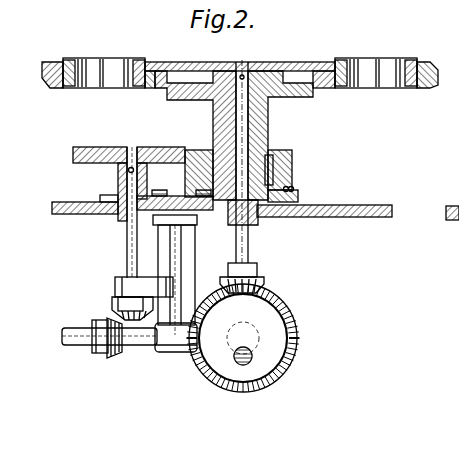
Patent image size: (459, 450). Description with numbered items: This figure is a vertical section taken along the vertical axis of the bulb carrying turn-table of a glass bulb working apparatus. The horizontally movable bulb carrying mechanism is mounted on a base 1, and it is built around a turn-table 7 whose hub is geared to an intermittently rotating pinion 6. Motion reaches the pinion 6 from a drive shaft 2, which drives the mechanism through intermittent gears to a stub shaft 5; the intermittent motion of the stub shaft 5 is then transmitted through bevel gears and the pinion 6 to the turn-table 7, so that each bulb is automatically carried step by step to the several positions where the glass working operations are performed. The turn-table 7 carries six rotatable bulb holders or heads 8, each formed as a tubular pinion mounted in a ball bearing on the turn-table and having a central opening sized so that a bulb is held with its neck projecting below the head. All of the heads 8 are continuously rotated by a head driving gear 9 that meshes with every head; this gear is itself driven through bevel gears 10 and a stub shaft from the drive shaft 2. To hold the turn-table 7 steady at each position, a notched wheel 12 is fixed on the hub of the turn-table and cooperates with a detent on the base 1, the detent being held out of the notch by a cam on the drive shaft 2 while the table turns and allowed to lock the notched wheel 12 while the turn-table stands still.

The base 1 is at (365, 205).
The drive shaft 2 is at (250, 344).
The stub shaft 5 is at (64, 342).
The pinion 6 is at (93, 148).
The turn-table 7 is at (287, 98).
The bulb holders or heads 8 is at (62, 66).
The head driving gear 9 is at (280, 64).
The bevel gears 10 is at (266, 290).
The notched wheel 12 is at (293, 182).